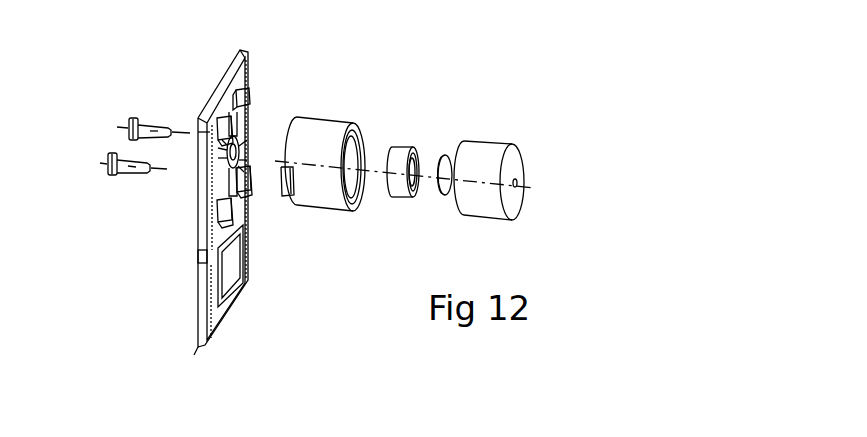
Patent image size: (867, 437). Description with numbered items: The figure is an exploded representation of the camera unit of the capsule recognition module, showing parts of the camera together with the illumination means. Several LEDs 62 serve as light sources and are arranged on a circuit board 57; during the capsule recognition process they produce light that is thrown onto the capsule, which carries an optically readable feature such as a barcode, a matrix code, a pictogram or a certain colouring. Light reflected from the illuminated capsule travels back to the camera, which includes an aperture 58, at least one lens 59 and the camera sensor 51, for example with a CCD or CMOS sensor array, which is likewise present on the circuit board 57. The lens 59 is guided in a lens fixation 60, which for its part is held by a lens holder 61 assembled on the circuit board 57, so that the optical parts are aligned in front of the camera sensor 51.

The camera sensor 51 is at (234, 157).
The circuit board 57 is at (198, 285).
The aperture 58 is at (521, 184).
The lens 59 is at (459, 176).
The lens fixation 60 is at (410, 135).
The lens holder 61 is at (331, 113).
The LEDs 62 is at (250, 100).